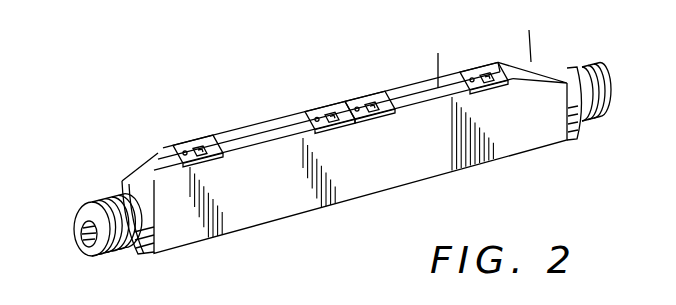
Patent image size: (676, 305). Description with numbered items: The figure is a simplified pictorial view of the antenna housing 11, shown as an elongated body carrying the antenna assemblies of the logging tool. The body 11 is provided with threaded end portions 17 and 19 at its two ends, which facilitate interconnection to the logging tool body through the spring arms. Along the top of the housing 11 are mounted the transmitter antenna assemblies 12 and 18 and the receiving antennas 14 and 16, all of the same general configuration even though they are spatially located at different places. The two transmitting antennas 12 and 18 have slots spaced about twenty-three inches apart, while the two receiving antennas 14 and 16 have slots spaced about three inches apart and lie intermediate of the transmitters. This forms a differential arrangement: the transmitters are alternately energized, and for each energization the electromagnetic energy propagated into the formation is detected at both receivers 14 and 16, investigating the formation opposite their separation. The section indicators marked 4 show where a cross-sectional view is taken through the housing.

The antenna housing 11 is at (503, 172).
The transmitter antenna assembly 12 is at (194, 150).
The receiving antenna 14 is at (317, 118).
The receiving antenna 16 is at (362, 102).
The transmitter antenna assembly 18 is at (478, 74).
The threaded end portion 17 is at (93, 202).
The threaded end portion 19 is at (577, 70).
The section line 4- 4 is at (447, 65).